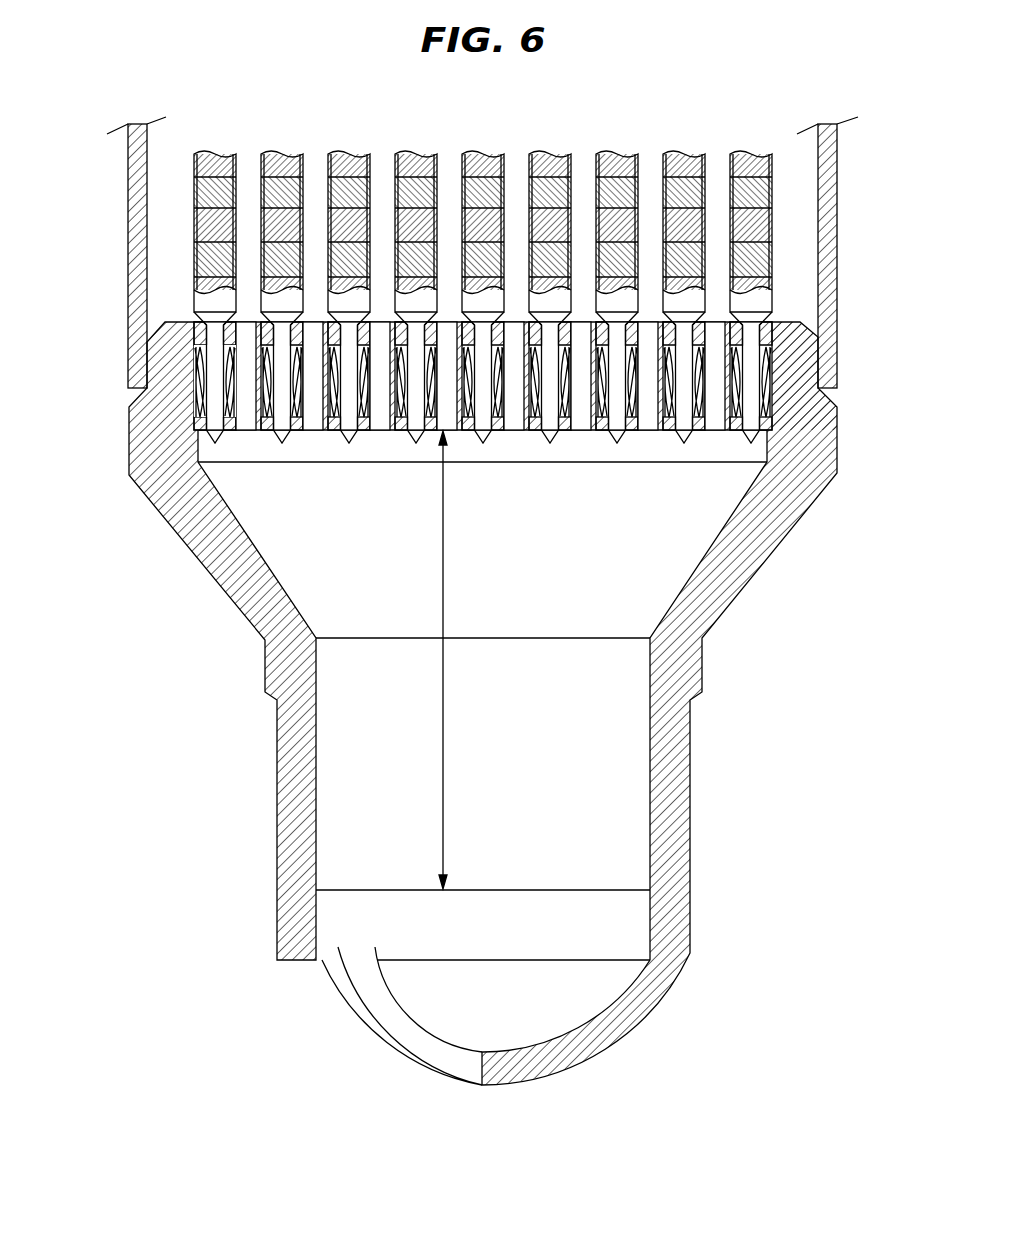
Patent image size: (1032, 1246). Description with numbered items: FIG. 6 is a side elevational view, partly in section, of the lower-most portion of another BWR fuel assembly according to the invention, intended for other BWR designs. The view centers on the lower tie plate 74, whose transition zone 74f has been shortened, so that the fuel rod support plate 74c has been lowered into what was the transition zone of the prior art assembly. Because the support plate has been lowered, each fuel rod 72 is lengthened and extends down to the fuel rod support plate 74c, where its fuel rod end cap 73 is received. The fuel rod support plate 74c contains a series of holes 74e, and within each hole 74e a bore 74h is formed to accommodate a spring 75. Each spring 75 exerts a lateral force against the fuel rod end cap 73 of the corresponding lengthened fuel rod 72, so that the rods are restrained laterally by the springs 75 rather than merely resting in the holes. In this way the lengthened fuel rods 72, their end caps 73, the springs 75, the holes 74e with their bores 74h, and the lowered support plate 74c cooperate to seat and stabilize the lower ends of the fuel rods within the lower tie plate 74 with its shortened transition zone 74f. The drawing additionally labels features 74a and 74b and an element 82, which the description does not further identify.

The lengthened fuel rod 72 is at (197, 238).
The fuel rod end cap 73 is at (213, 358).
The lower tie plate 74 is at (747, 553).
The housing bore 74a is at (648, 923).
The domed closed end 74b is at (670, 962).
The fuel rod support plate 74c is at (797, 365).
The hole 74e is at (390, 344).
The shortened transition zone 74f is at (444, 540).
The bore 74h is at (200, 405).
The springs 75 is at (207, 378).
The sleeve wall 82 is at (128, 190).